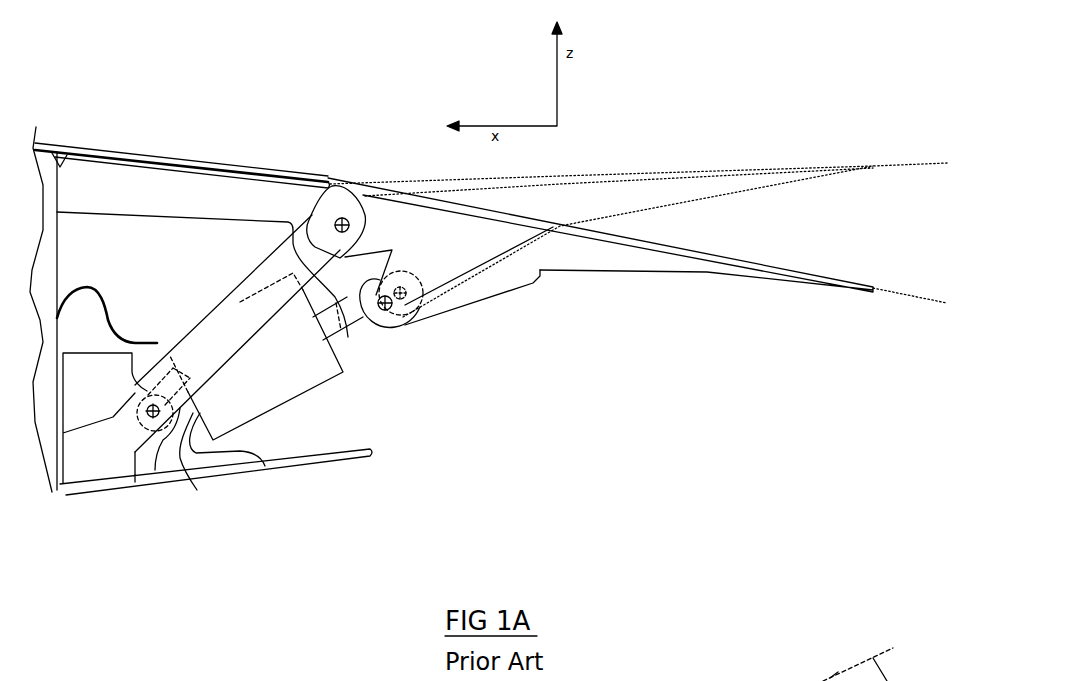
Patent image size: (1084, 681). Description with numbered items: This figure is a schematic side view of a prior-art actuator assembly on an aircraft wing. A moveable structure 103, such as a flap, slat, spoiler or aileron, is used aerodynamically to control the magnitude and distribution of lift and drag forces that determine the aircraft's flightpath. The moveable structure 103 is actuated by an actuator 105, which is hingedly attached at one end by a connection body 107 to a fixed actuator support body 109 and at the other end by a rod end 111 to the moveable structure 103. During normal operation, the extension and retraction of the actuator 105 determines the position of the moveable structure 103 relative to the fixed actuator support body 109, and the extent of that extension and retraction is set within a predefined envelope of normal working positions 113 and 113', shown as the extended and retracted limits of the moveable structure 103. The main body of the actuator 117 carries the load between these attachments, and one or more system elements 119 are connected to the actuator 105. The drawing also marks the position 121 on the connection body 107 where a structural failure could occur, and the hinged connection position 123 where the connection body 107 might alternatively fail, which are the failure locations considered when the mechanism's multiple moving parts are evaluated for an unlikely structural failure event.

The moveable structure 103 is at (540, 270).
The actuator 105 is at (320, 402).
The connection body 107 is at (265, 466).
The fixed actuator support body 109 is at (155, 470).
The rod end 111 is at (293, 180).
The normal working position 113 is at (877, 352).
The normal working position 113' is at (638, 189).
The main body of the actuator 117 is at (273, 345).
The system element 119 is at (70, 307).
The failure position 121 is at (262, 455).
The hinged connection position 123 is at (197, 490).